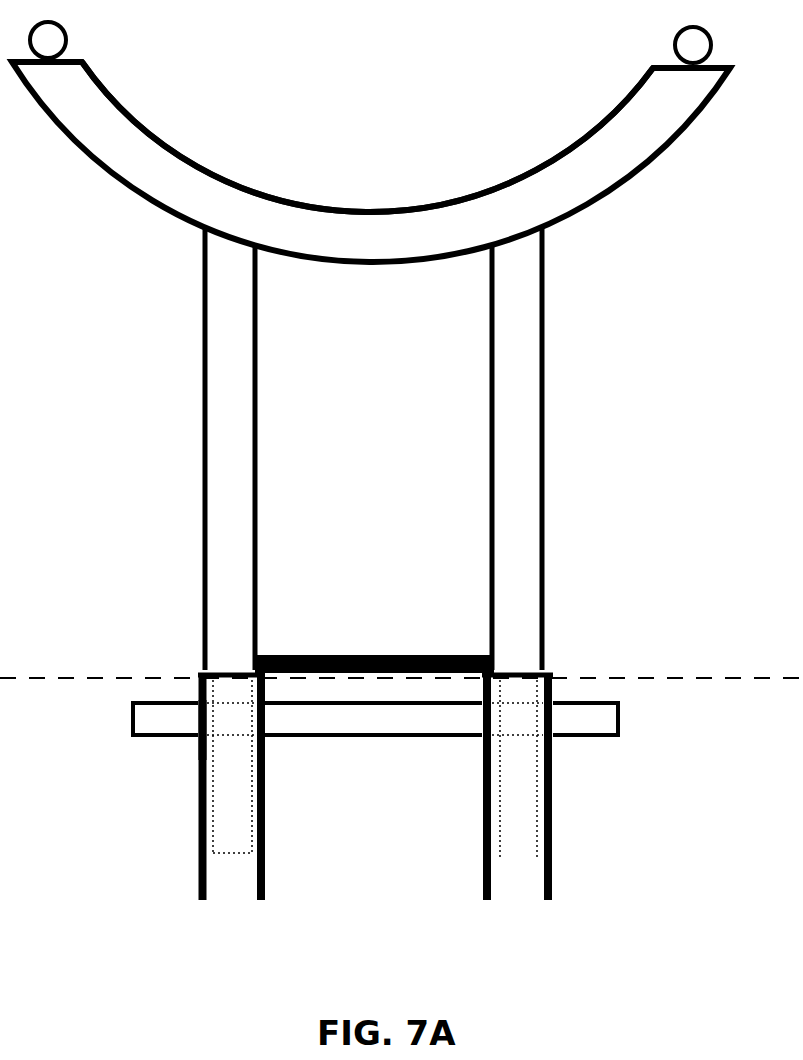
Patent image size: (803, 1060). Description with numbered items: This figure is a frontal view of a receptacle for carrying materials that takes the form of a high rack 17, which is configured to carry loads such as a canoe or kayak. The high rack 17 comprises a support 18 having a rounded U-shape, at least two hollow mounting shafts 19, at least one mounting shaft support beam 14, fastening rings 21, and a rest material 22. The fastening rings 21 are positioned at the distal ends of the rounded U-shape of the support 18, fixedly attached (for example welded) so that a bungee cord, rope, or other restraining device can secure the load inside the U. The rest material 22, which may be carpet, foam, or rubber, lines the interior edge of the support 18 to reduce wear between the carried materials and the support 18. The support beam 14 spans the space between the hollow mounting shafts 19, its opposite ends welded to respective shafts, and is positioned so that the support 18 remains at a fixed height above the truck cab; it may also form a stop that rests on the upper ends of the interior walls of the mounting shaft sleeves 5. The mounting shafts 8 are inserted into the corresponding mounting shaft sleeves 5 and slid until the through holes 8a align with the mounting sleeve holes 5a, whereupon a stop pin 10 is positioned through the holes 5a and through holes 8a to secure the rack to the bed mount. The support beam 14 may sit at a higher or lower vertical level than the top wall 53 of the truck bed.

The high rack 17 is at (145, 387).
The support 18 is at (593, 168).
The rest material 22 is at (343, 208).
The fastening rings 21 is at (48, 40).
The mounting shafts 8 is at (215, 565).
The hollow mounting shafts 19 is at (518, 385).
The mounting shaft support beam 14 is at (405, 655).
The top wall of the truck bed 53 is at (650, 680).
The stop pin 10 is at (598, 733).
The mounting shaft sleeves 5 is at (482, 868).
The mounting sleeve holes 5a is at (266, 740).
The through holes 8a is at (198, 742).